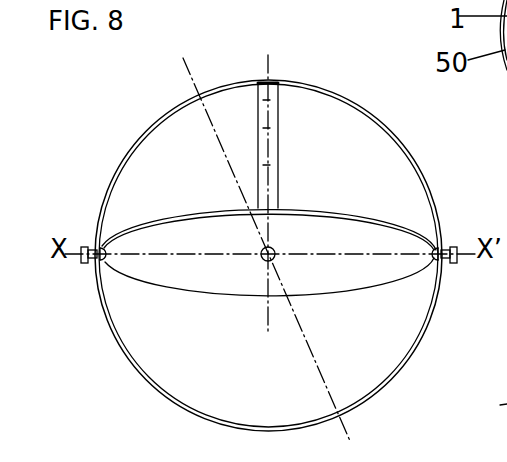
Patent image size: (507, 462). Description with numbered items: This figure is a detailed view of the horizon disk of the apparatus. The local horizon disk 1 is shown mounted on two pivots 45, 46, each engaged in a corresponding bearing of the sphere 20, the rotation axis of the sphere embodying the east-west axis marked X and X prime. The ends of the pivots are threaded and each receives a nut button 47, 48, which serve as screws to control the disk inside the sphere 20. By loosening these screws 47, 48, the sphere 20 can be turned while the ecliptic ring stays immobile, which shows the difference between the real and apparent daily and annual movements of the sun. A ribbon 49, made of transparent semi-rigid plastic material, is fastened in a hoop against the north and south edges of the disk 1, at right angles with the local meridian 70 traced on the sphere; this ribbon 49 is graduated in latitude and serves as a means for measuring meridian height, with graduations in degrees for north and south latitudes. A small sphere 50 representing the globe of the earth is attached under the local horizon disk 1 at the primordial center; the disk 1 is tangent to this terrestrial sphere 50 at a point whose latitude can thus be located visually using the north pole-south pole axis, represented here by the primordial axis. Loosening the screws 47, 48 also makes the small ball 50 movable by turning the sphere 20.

The horizon disk 1 is at (160, 228).
The sphere 20 is at (317, 82).
The pivot 45 is at (100, 243).
The pivot 46 is at (447, 262).
The nut button 47 is at (80, 264).
The nut button 48 is at (447, 248).
The ribbon 49 is at (258, 128).
The small sphere 50 is at (264, 260).
The local meridian 70 is at (506, 405).